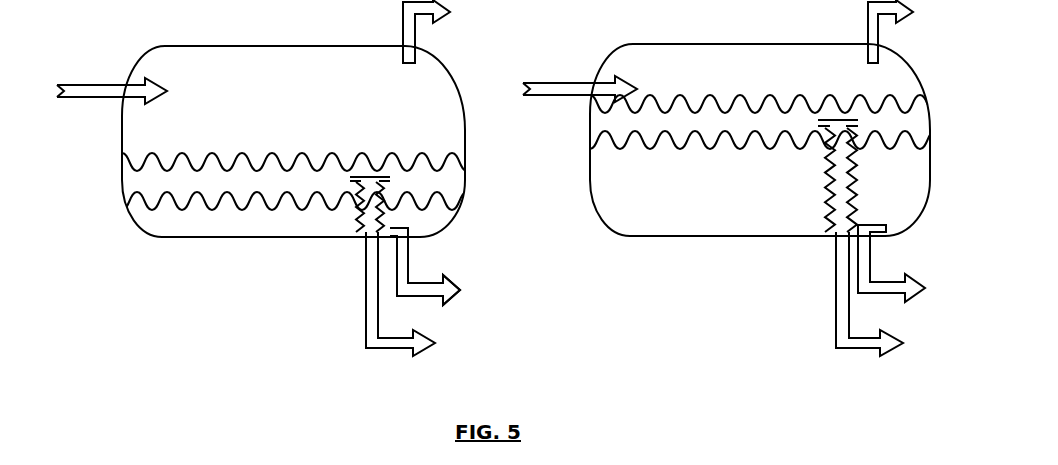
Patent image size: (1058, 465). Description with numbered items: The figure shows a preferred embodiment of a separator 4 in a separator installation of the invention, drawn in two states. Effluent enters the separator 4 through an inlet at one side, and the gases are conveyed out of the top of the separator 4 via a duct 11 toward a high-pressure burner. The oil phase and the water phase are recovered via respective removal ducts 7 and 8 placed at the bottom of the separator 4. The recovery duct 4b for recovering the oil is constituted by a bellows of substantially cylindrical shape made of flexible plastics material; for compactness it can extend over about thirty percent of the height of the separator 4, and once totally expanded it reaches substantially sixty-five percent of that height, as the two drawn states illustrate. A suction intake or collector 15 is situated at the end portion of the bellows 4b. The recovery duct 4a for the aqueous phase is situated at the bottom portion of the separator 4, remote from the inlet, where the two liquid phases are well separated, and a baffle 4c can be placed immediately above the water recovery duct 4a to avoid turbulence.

The separator 4 is at (170, 232).
The duct 11 is at (400, 13).
The suction intake (collector) 15 is at (372, 172).
The recovery duct for recovering the oil (bellows) 4b is at (366, 213).
The baffle 4c is at (411, 228).
The removal duct 7 is at (366, 321).
The removal duct 8 is at (448, 294).
The recovery duct for recovering the aqueous phase 4a is at (869, 233).